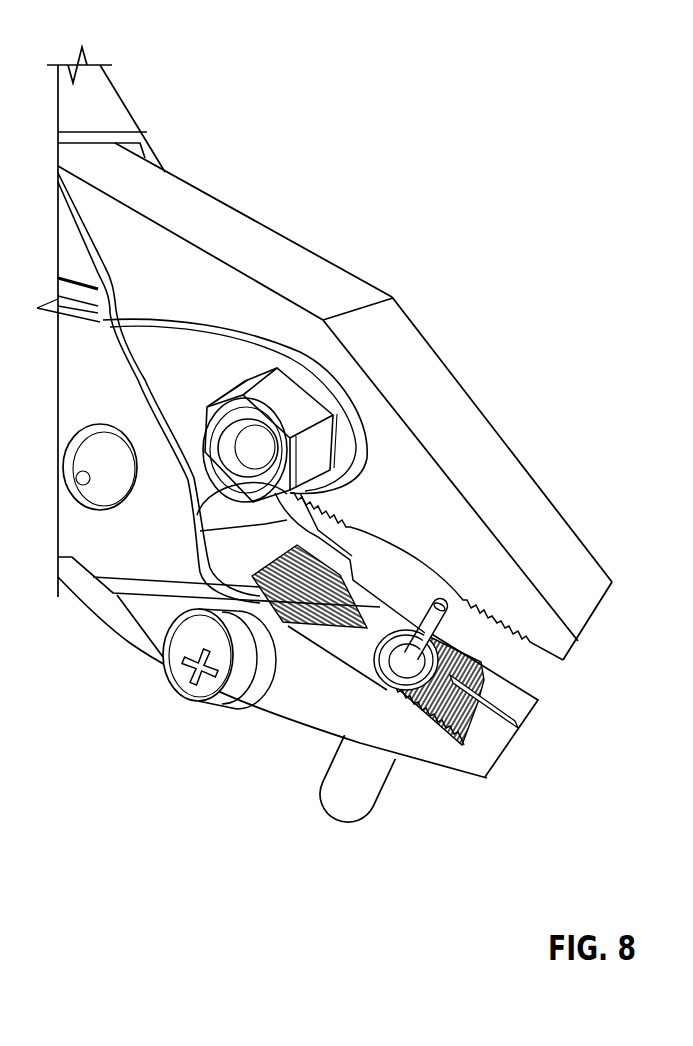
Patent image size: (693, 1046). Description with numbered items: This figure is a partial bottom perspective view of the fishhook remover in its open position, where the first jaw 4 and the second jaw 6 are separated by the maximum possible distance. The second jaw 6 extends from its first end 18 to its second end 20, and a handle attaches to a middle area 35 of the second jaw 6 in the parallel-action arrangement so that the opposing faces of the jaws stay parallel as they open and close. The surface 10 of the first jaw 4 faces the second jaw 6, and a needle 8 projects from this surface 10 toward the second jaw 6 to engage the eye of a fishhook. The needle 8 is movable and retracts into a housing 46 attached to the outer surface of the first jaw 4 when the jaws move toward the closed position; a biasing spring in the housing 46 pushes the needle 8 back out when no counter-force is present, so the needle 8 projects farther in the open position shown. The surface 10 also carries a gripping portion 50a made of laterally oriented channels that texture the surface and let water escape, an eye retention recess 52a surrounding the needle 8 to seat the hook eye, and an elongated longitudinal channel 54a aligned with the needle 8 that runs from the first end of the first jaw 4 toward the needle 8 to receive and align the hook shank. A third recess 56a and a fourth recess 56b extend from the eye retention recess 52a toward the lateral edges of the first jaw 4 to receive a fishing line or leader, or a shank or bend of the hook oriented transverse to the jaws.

The first jaw 4 is at (310, 713).
The second jaw 6 is at (507, 507).
The needle 8 is at (418, 700).
The surface 10 is at (490, 737).
The first end 18 is at (605, 600).
The second end 20 is at (173, 252).
The middle area 35 is at (355, 337).
The housing 46 is at (347, 803).
The gripping portion 50a is at (490, 663).
The eye retention recess 52a is at (464, 690).
The elongated longitudinal channel 54a is at (518, 706).
The third channel/recess 56a is at (353, 655).
The fourth channel/recess 56b is at (168, 622).